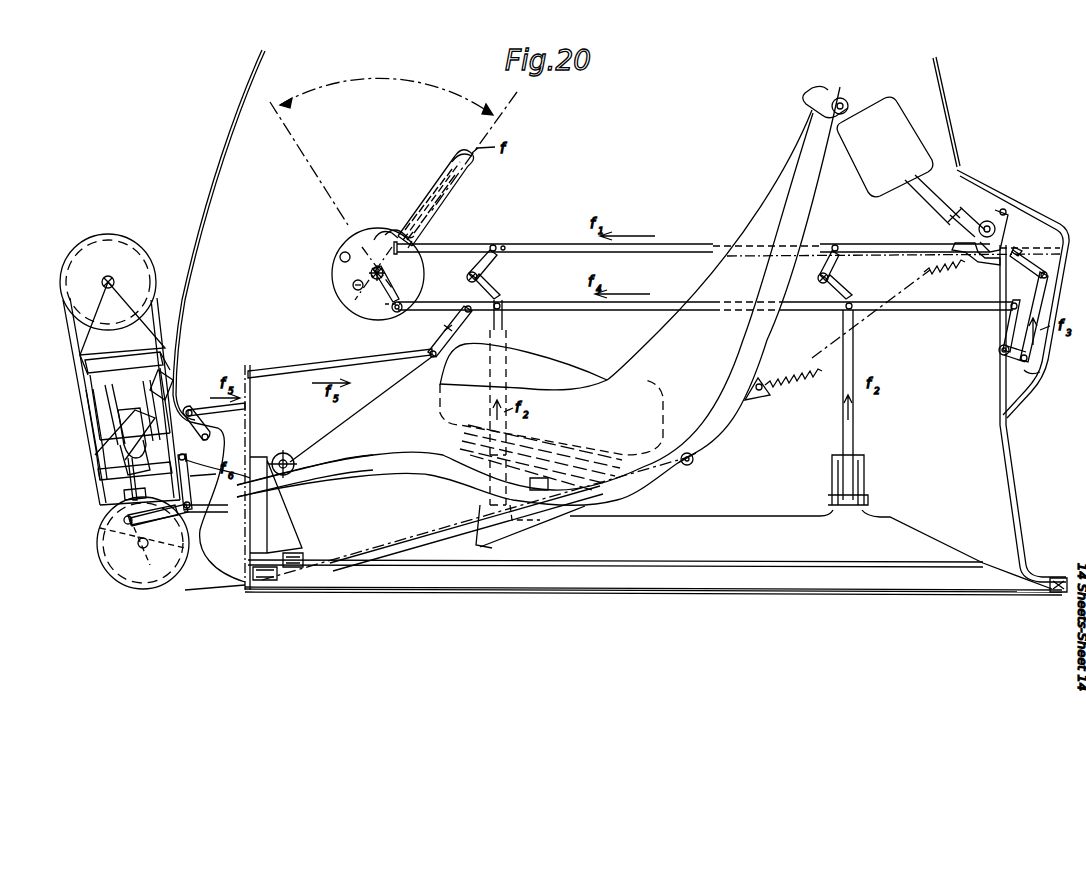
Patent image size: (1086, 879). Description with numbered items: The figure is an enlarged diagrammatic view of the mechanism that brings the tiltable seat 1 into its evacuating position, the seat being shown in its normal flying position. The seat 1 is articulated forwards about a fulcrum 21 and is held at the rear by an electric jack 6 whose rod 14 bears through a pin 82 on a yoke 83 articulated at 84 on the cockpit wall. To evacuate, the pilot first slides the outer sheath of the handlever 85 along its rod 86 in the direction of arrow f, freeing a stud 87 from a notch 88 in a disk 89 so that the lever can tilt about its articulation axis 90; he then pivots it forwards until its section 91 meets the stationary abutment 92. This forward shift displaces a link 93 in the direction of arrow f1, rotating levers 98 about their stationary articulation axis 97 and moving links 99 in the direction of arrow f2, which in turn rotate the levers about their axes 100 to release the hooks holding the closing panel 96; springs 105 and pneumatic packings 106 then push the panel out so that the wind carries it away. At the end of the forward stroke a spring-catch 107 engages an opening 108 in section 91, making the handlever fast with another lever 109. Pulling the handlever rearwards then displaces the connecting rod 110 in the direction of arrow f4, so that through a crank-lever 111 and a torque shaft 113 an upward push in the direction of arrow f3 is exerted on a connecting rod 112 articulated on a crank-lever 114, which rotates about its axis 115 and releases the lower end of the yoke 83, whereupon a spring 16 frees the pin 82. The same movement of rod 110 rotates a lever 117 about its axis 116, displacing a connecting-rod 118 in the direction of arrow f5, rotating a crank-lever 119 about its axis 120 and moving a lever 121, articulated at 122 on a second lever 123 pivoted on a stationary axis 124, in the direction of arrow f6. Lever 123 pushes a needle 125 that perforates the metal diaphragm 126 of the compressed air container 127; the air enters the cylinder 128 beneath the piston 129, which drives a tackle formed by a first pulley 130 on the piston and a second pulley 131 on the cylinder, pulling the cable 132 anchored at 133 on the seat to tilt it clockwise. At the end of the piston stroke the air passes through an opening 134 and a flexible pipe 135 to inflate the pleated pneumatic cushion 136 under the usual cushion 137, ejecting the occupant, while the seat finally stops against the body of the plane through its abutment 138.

The seat 1 is at (727, 430).
The electric jack 6 is at (892, 112).
The rod of the jack 14 is at (915, 180).
The spring 16 is at (806, 362).
The fulcrum 21 is at (281, 452).
The pin 82 is at (977, 228).
The yoke 83 is at (975, 265).
The articulation of the yoke 84 is at (998, 210).
The handlever 85 is at (428, 205).
The rod of the lever 86 is at (447, 200).
The stud 87 is at (390, 230).
The notch 88 is at (378, 238).
The disk 89 is at (334, 272).
The articulation axis 90 is at (372, 283).
The section of the lever 91 is at (362, 242).
The stationary abutment 92 is at (340, 254).
The link 93 is at (668, 245).
The closing panel 96 is at (697, 596).
The stationary articulation axis 97 is at (466, 278).
The levers 98 is at (490, 287).
The links 99 is at (515, 333).
The articulation axes 100 is at (1062, 595).
The springs 105 is at (303, 555).
The pneumatic packings 106 is at (262, 581).
The spring-catch 107 is at (405, 290).
The opening 108 is at (353, 287).
The lever 109 is at (390, 312).
The connecting rod 110 is at (608, 314).
The crank-lever 111 is at (1005, 332).
The connecting rod 112 is at (1044, 328).
The torque shaft 113 is at (1000, 354).
The crank-lever 114 is at (1022, 262).
The articulation axis 115 is at (1020, 248).
The articulation axis 116 is at (456, 334).
The lever 117 is at (437, 343).
The connecting-rod 118 is at (290, 370).
The crank-lever 119 is at (199, 478).
The articulation axis 120 is at (210, 433).
The lever 121 is at (206, 500).
The articulation 122 is at (198, 514).
The second lever 123 is at (120, 548).
The stationary axis 124 is at (125, 520).
The needle 125 is at (124, 494).
The metal diaphragm 126 is at (132, 455).
The compressed air container 127 is at (86, 437).
The cylinder 128 is at (96, 462).
The piston 129 is at (100, 478).
The first pulley 130 is at (118, 248).
The second pulley 131 is at (140, 585).
The cable 132 is at (66, 312).
The anchorage 133 is at (690, 466).
The opening 134 is at (150, 385).
The flexible pipe 135 is at (400, 478).
The pleated pneumatic cushion 136 is at (548, 460).
The usual cushion 137 is at (662, 390).
The abutment 138 is at (495, 552).